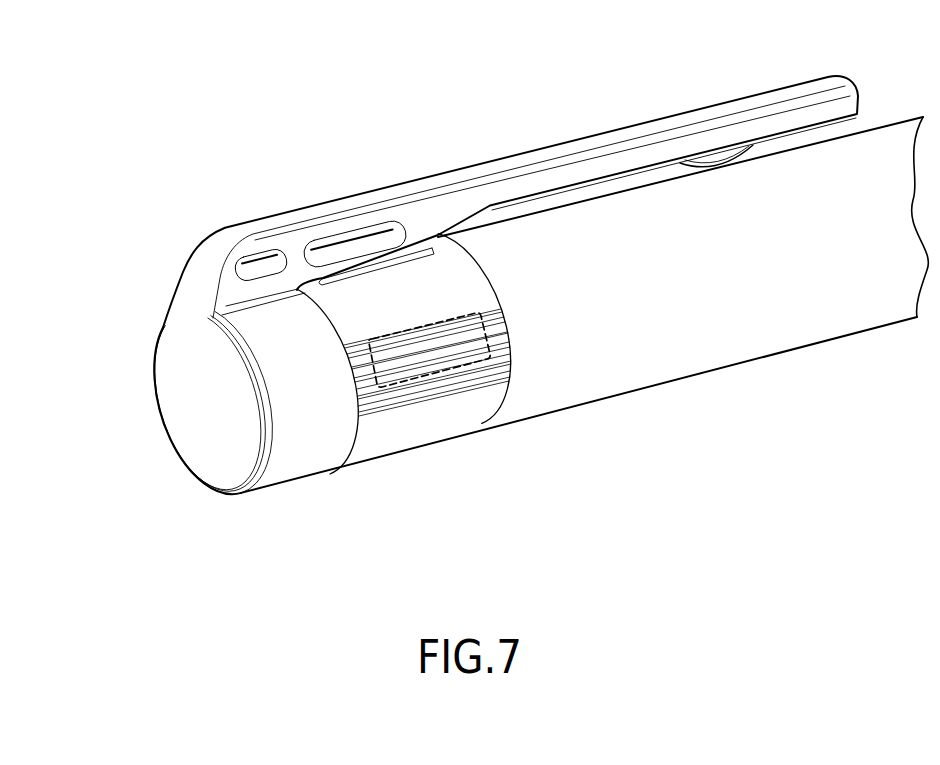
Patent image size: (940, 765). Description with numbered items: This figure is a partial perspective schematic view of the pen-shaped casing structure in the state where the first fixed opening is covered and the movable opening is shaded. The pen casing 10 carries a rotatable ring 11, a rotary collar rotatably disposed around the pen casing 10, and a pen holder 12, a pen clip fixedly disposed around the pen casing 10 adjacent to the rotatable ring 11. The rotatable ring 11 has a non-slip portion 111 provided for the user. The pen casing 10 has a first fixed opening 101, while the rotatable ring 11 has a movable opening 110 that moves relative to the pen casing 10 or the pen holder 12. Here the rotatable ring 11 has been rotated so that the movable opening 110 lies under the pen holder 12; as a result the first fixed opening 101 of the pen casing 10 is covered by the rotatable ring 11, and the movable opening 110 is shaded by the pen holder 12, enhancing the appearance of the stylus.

The pen casing 10 is at (627, 242).
The rotatable ring 11 is at (429, 312).
The pen holder 12 is at (258, 226).
The first fixed opening 101 is at (415, 366).
The movable opening 110 is at (377, 263).
The non-slip portion 111 is at (476, 377).